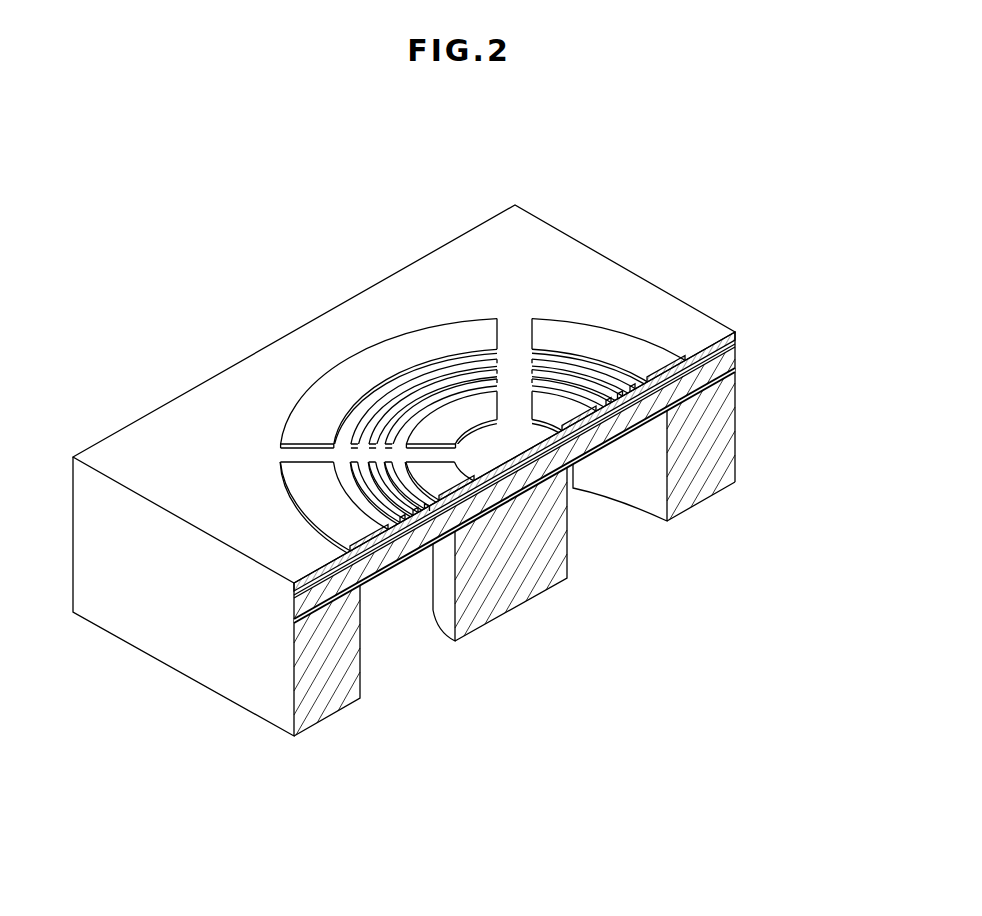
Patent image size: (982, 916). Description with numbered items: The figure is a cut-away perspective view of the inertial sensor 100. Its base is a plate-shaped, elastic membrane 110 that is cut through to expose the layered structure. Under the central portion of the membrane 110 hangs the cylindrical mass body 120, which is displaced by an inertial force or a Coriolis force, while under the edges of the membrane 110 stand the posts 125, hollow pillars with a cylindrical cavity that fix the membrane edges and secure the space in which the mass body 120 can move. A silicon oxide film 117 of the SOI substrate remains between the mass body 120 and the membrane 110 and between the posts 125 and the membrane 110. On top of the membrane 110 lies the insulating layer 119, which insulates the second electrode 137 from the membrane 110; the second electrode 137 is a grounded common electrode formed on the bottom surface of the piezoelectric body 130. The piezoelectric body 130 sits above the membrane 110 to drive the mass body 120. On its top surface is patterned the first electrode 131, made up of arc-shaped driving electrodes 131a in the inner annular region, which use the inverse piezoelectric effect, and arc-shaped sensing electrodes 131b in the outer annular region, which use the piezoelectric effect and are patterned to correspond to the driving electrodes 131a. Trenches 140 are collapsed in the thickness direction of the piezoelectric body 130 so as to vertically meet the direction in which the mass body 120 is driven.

The inertial sensor 100 is at (442, 147).
The membrane 110 is at (472, 494).
The silicon oxide film 117 is at (390, 566).
The insulating layer 119 is at (375, 552).
The mass body 120 is at (535, 583).
The posts 125 is at (337, 697).
The piezoelectric body 130 is at (561, 451).
The second electrode 137 is at (735, 346).
The first electrode 131 is at (440, 427).
The driving electrodes 131a is at (367, 447).
The sensing electrodes 131b is at (303, 480).
The trenches 140 is at (395, 423).